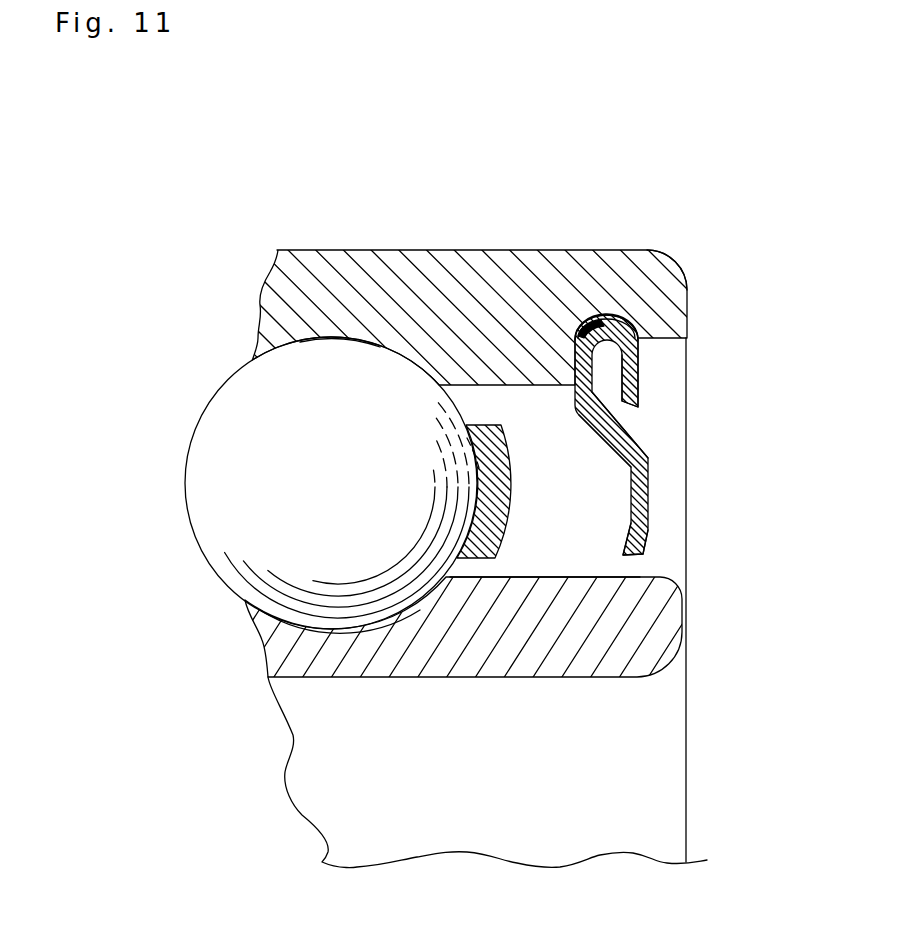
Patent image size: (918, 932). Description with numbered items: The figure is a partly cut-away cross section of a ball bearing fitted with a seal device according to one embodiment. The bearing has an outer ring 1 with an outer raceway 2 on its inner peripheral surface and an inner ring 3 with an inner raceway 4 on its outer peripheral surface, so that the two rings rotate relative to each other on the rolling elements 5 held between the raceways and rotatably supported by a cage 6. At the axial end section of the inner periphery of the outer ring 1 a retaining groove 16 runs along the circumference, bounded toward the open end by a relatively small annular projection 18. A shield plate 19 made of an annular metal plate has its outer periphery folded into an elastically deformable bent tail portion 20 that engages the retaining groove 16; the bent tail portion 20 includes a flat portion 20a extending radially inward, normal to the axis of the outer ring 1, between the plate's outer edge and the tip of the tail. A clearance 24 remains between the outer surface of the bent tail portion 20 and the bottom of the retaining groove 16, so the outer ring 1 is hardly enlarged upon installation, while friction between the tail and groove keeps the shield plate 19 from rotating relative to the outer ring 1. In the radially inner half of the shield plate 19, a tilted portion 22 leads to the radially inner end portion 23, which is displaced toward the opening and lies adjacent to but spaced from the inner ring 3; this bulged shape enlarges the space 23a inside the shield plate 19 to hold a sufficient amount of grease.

The outer ring 1 is at (410, 267).
The outer raceway 2 is at (333, 340).
The inner ring 3 is at (671, 643).
The inner raceway 4 is at (337, 628).
The rolling elements 5 is at (382, 367).
The cage 6 is at (488, 423).
The retaining groove 16 is at (602, 313).
The annular projection 18 is at (660, 284).
The shield plate 19 is at (648, 490).
The bent tail portion 20 is at (630, 348).
The flat portion 20a is at (640, 370).
The tilted portion 22 is at (632, 430).
The radially inner end portion 23 is at (640, 530).
The space 23a is at (532, 547).
The clearance 24 is at (614, 322).